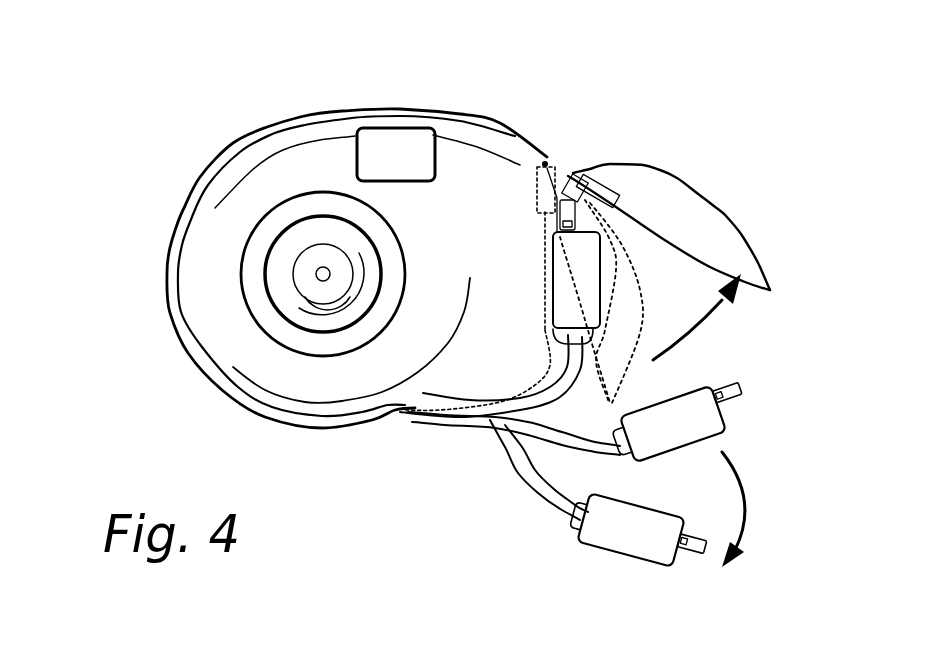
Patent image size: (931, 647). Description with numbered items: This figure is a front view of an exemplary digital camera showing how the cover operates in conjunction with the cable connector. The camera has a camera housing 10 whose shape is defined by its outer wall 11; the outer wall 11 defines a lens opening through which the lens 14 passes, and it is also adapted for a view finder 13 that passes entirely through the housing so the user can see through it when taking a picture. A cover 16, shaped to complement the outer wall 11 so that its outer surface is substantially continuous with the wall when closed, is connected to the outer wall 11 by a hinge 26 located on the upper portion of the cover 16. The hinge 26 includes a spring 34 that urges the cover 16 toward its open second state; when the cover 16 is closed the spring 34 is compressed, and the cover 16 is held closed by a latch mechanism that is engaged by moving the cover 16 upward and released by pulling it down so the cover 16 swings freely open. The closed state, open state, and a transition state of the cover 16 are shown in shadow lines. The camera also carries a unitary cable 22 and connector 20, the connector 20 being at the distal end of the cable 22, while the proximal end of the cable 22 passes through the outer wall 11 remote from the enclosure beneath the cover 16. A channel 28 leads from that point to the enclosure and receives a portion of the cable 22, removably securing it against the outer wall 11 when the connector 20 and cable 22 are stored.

The camera housing 10 is at (314, 72).
The outer wall 11 is at (503, 143).
The view finder 13 is at (405, 128).
The lens 14 is at (307, 282).
The cover 16 is at (703, 200).
The connector 20 is at (740, 405).
The cable 22 is at (514, 480).
The hinge 26 is at (546, 165).
The channel 28 is at (408, 413).
The spring 34 is at (580, 171).